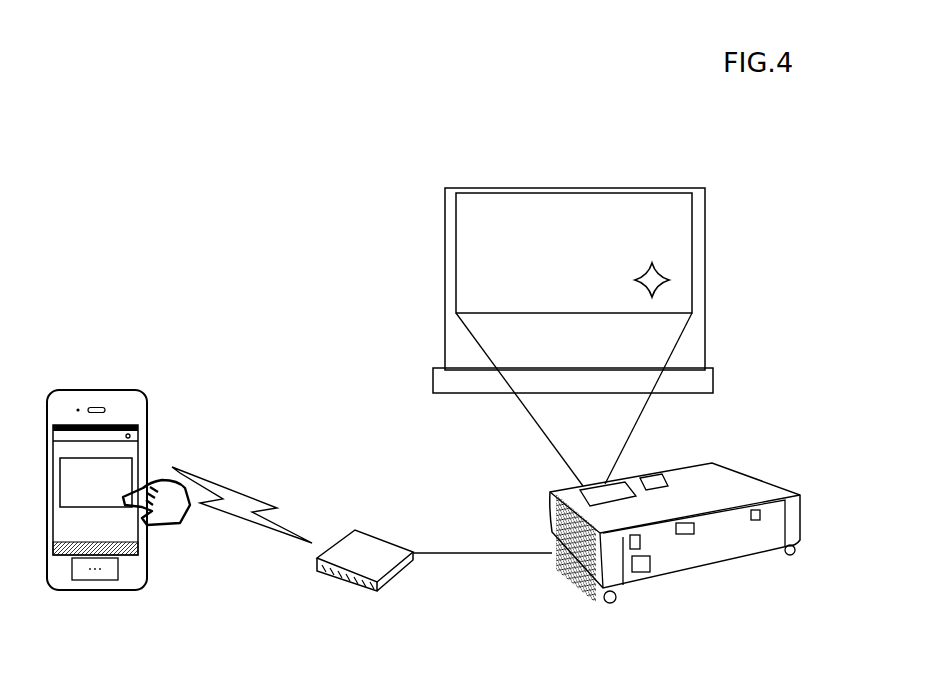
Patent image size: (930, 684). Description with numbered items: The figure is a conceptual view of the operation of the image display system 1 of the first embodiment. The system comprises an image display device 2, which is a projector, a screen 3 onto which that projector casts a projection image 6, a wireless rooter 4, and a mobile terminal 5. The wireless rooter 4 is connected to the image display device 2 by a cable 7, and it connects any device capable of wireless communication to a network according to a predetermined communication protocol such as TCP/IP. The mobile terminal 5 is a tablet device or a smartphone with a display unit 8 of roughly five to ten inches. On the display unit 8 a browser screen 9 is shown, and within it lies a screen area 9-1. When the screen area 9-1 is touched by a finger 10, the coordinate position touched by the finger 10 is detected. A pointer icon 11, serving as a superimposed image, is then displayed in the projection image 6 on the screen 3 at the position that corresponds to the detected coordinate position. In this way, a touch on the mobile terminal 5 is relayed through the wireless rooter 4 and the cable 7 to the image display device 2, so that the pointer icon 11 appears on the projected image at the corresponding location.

The image display system 1 is at (245, 265).
The image display device 2 is at (740, 470).
The screen 3 is at (705, 220).
The wireless rooter 4 is at (363, 533).
The mobile terminal 5 is at (132, 388).
The projection image 6 is at (632, 188).
The cable 7 is at (458, 552).
The display unit 8 is at (140, 436).
The browser screen 9 is at (130, 533).
The screen area 9-1 is at (132, 466).
The finger 10 is at (187, 526).
The pointer icon 11 is at (665, 278).